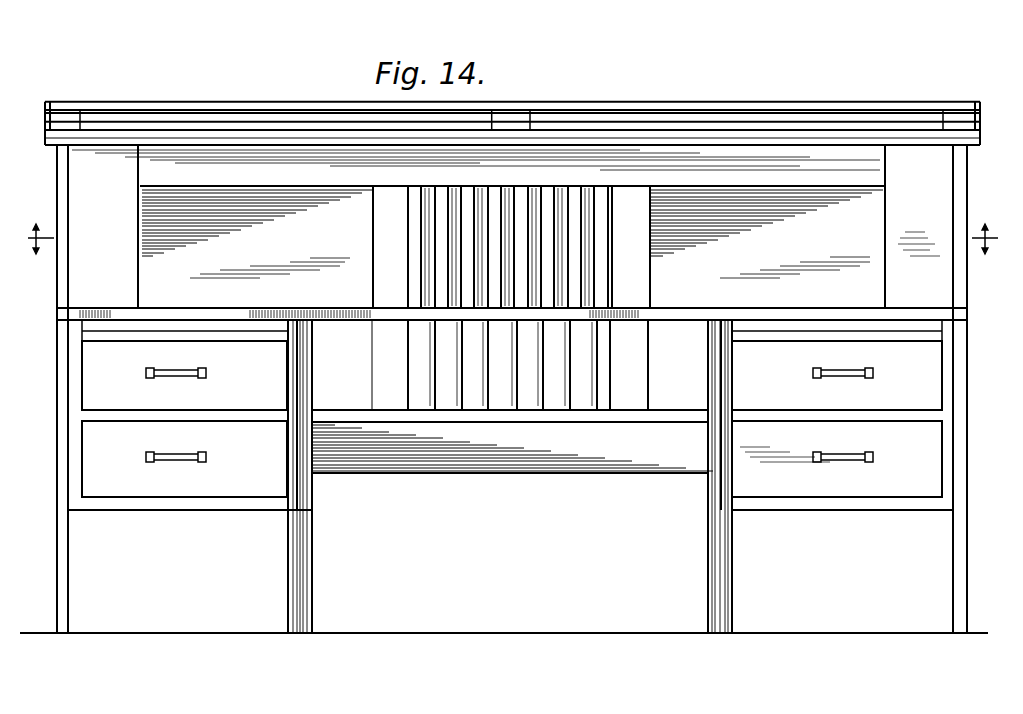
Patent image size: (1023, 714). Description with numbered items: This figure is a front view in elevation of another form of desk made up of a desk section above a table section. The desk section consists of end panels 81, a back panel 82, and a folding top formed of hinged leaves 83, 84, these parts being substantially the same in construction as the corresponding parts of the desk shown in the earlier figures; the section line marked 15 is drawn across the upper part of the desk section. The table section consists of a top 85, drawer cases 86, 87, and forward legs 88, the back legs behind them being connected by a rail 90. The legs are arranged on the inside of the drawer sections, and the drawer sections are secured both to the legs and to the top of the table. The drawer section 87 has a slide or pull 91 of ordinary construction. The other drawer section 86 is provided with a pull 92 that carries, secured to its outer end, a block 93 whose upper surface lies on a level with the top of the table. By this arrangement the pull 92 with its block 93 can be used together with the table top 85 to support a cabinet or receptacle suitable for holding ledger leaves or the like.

The section line 15 is at (511, 239).
The end panels 81 is at (62, 326).
The back panel 82 is at (940, 212).
The hinged leaf 83 is at (253, 110).
The hinged leaf 84 is at (192, 128).
The top 85 is at (742, 290).
The drawer case 86 is at (80, 413).
The drawer case 87 is at (950, 427).
The forward legs 88 is at (302, 562).
The rail 90 is at (447, 450).
The slide or pull 91 is at (888, 327).
The pull 92 is at (147, 332).
The block 93 is at (222, 312).